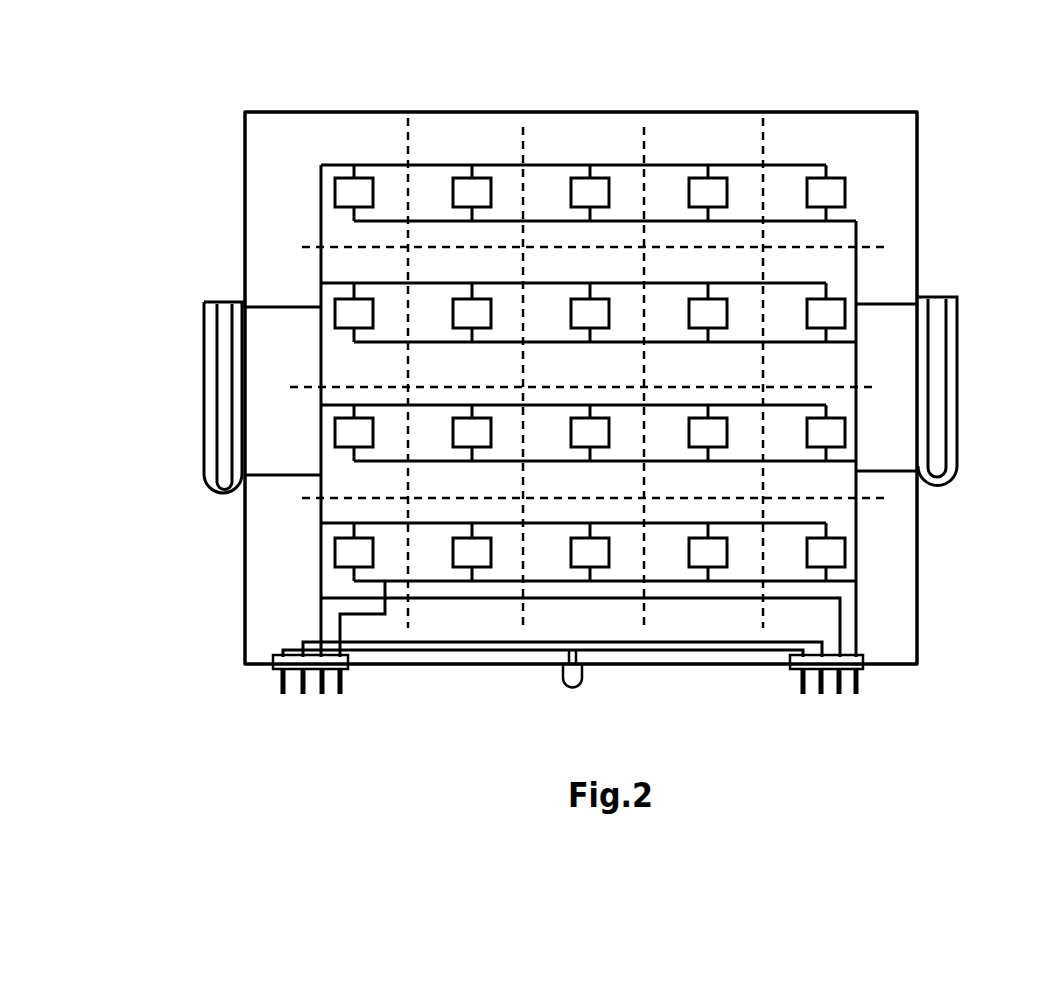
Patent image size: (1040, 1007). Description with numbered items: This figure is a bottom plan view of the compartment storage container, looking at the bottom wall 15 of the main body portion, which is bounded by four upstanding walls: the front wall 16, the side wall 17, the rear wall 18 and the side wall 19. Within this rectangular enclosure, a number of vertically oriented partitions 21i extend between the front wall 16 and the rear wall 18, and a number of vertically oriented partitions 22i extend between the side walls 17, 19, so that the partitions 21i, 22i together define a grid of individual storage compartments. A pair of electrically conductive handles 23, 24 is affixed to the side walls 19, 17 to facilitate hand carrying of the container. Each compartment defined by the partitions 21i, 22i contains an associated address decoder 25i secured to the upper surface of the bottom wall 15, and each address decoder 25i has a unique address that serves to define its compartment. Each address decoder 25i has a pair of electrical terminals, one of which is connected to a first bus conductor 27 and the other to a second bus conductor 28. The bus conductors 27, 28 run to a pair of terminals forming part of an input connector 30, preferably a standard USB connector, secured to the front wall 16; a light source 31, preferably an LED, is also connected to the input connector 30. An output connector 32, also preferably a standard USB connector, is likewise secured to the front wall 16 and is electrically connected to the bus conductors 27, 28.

The bottom wall 15 is at (895, 150).
The front wall 16 is at (420, 667).
The side wall 17 is at (243, 543).
The rear wall 18 is at (577, 112).
The side wall 19 is at (920, 244).
The partitions 21i is at (408, 143).
The partitions 22i is at (302, 498).
The handle 23 is at (958, 402).
The handle 24 is at (202, 350).
The address decoder 25i is at (352, 557).
The first bus conductor 27 is at (435, 163).
The second bus conductor 28 is at (668, 583).
The input connector 30 is at (858, 672).
The light source 31 is at (580, 678).
The output connector 32 is at (280, 669).